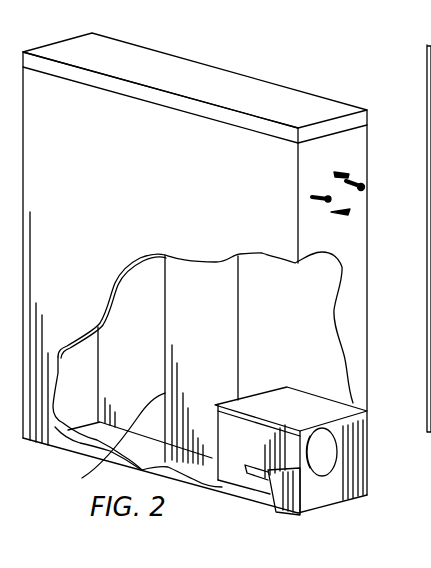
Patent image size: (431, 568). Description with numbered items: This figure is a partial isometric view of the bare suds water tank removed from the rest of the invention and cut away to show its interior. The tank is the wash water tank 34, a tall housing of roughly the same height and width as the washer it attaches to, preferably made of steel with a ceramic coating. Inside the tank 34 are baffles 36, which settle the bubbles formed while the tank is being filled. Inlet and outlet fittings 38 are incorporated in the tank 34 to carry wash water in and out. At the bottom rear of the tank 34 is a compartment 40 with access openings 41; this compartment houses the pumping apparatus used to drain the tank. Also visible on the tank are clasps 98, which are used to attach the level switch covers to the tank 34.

The wash water tank 34 is at (183, 60).
The baffles 36 is at (84, 477).
The inlet and outlet fittings 38 is at (318, 191).
The compartment 40 is at (367, 494).
The access openings 41 is at (340, 450).
The clasps 98 is at (341, 170).